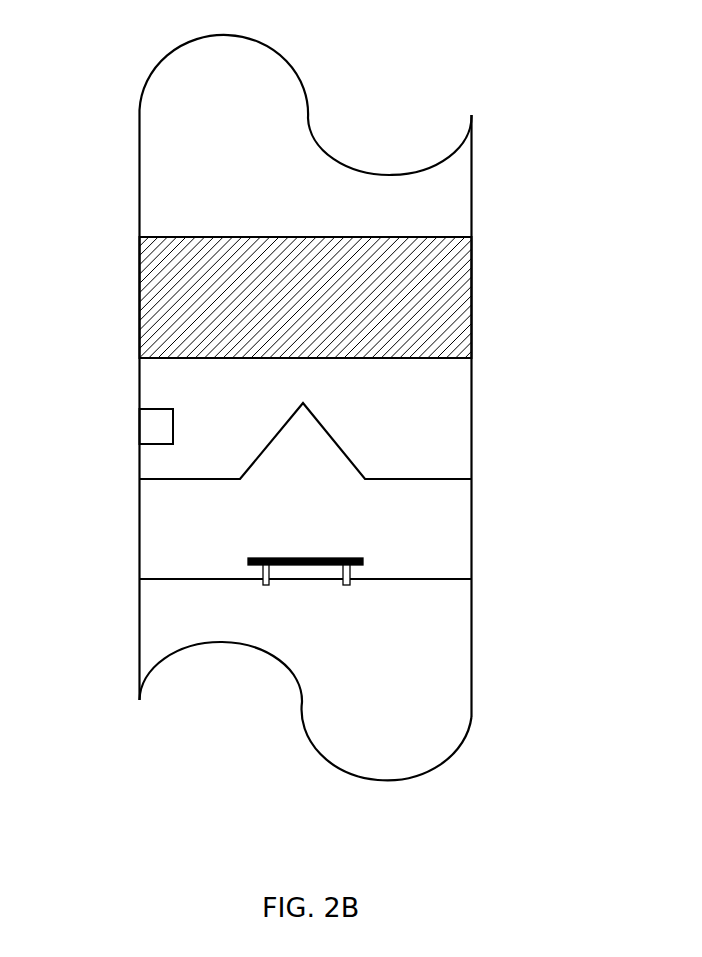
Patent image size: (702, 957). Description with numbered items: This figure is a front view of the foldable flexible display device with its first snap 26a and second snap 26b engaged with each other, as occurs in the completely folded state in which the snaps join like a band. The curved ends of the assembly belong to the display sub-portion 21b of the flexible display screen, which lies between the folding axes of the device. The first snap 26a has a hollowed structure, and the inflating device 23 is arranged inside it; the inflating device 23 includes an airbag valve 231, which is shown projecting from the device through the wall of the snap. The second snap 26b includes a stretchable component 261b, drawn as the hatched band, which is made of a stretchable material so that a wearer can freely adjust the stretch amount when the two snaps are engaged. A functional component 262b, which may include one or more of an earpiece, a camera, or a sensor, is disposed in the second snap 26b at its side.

The display sub-portion 21b is at (268, 88).
The stretchable component 261b is at (460, 307).
The second snap 26b is at (457, 425).
The functional component 262b is at (147, 433).
The first snap 26a is at (453, 510).
The inflating device 23 is at (364, 572).
The airbag valve 231 is at (259, 583).